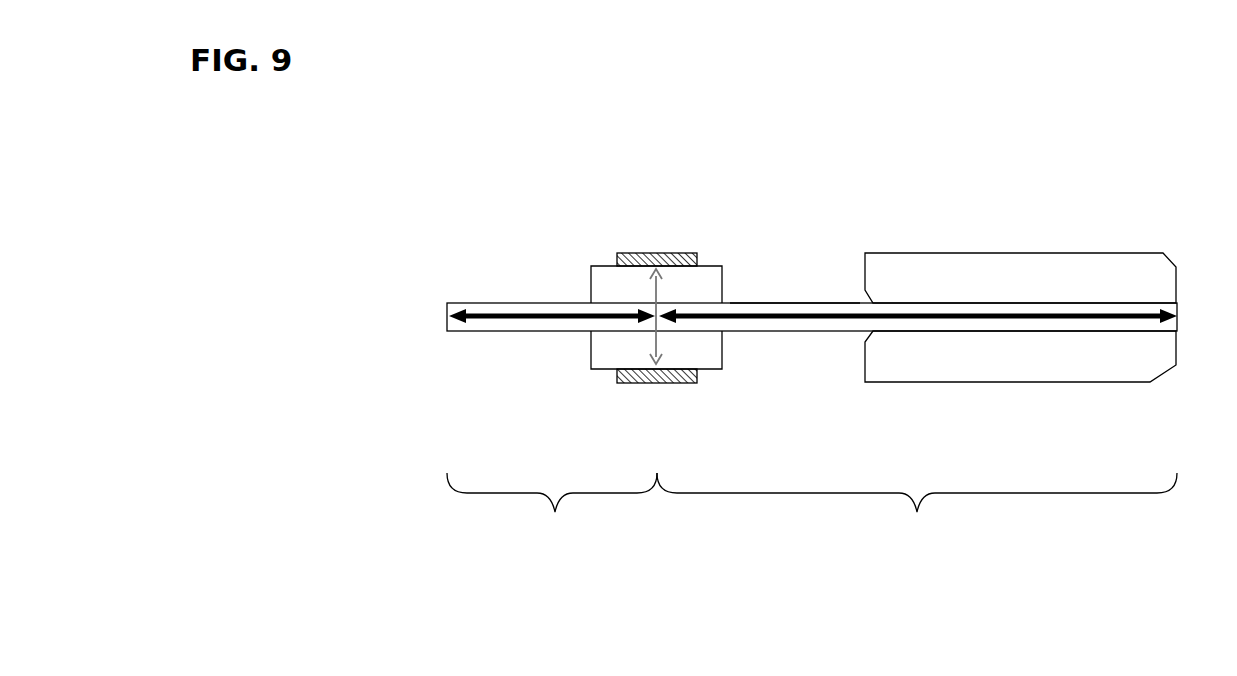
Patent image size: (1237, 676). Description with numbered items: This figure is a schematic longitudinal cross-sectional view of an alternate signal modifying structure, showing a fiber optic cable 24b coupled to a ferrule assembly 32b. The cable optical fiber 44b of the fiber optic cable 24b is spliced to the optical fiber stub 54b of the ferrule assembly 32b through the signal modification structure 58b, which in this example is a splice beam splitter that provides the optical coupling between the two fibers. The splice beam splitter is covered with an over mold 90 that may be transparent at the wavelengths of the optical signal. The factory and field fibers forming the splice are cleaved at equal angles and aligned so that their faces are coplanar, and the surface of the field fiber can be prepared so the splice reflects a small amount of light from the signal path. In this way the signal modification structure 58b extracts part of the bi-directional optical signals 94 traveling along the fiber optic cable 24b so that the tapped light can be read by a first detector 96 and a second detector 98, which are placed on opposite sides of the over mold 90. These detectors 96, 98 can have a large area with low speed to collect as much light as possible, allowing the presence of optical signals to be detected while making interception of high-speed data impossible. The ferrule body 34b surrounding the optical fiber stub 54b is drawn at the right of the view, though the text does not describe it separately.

The cable optical fiber 44b is at (498, 303).
The over mold 90 is at (601, 288).
The first detector 96 is at (671, 251).
The second detector 98 is at (673, 385).
The bi-directional optical signals 94 is at (551, 324).
The signal modification structure 58b is at (675, 297).
The optical fiber stub 54b is at (792, 306).
The body member 34b is at (1046, 267).
The fiber optic cable 24b is at (552, 505).
The ferrule assembly 32b is at (917, 509).